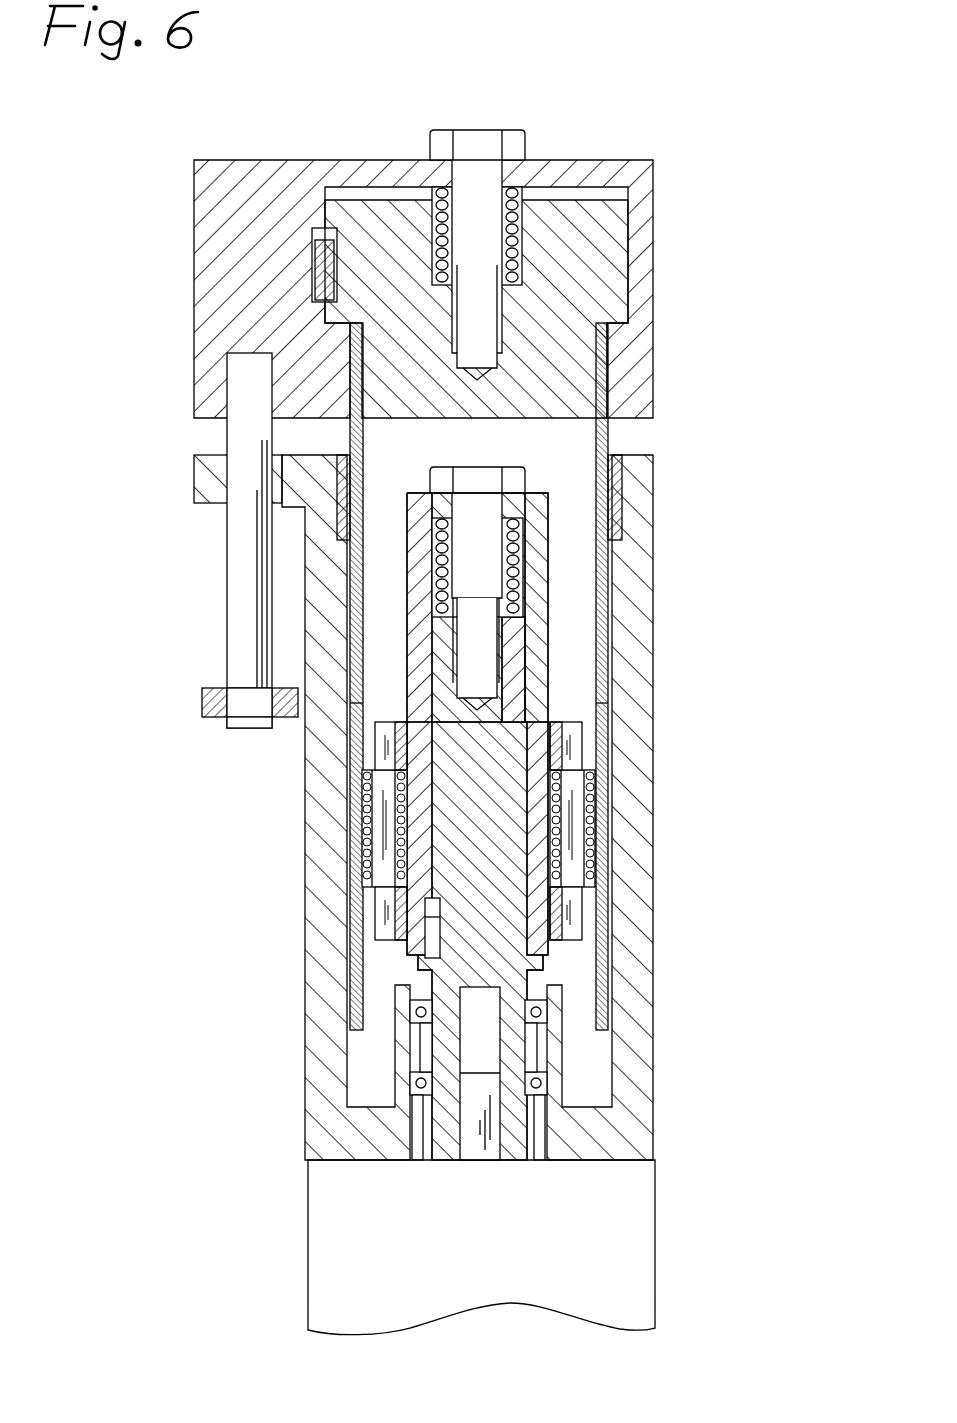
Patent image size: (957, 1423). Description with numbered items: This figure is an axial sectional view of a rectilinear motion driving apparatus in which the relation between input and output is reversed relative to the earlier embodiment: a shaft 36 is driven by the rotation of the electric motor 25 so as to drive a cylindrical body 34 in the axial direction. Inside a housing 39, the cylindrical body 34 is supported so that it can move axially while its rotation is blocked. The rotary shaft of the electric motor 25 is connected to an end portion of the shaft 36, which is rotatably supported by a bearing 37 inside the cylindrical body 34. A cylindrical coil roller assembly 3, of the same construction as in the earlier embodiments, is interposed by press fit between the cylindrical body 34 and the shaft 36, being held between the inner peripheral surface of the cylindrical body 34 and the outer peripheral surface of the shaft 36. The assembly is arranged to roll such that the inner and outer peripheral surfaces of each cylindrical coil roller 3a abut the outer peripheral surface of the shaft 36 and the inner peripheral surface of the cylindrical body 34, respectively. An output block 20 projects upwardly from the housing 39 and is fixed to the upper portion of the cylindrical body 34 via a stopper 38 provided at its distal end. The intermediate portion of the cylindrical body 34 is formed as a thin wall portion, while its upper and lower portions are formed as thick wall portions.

The output block 20 is at (620, 162).
The stopper 38 is at (605, 232).
The shaft 36 is at (548, 528).
The cylindrical body 34 is at (603, 600).
The housing 39 is at (638, 657).
The cylindrical coil roller assembly 3 is at (575, 807).
The cylindrical coil roller 3a is at (352, 823).
The bearing 37 is at (419, 1083).
The electric motor 25 is at (636, 1226).